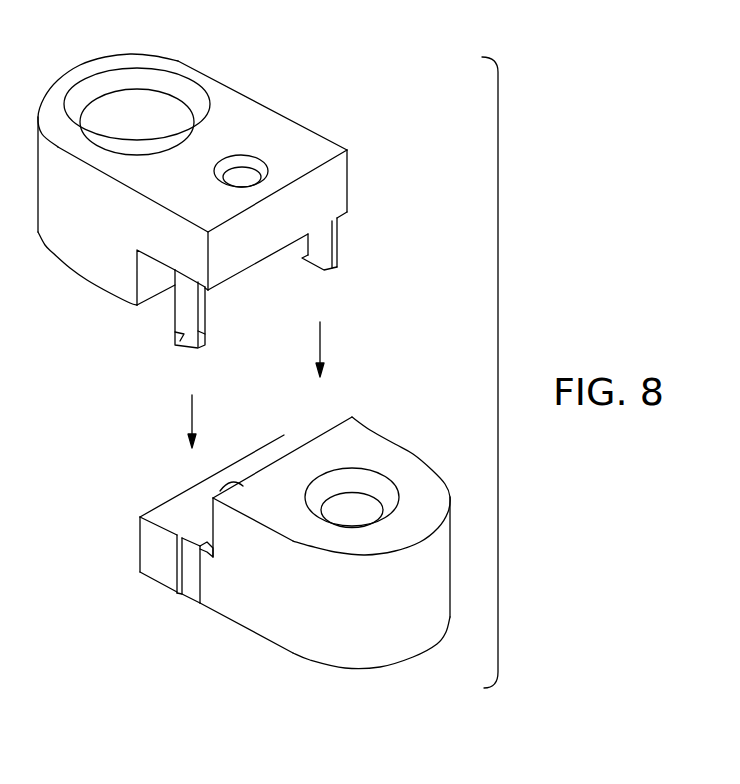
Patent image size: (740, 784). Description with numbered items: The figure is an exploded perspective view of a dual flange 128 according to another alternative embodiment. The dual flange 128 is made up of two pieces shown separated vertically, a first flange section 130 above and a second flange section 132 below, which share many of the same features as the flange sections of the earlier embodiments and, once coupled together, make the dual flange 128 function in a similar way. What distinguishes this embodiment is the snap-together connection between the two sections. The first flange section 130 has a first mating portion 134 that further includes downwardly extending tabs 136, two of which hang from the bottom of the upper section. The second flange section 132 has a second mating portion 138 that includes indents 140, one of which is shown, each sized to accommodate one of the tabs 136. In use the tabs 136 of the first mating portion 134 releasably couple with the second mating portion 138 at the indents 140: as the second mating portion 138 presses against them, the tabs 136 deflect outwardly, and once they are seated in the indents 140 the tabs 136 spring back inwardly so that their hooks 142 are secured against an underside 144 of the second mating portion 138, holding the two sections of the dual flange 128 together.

The dual flange 128 is at (473, 370).
The first flange section 130 is at (232, 90).
The second flange section 132 is at (402, 448).
The first mating portion 134 is at (318, 137).
The tabs 136 is at (178, 336).
The second mating portion 138 is at (297, 448).
The indents 140 is at (190, 572).
The hooks 142 is at (313, 268).
The underside 144 is at (196, 605).